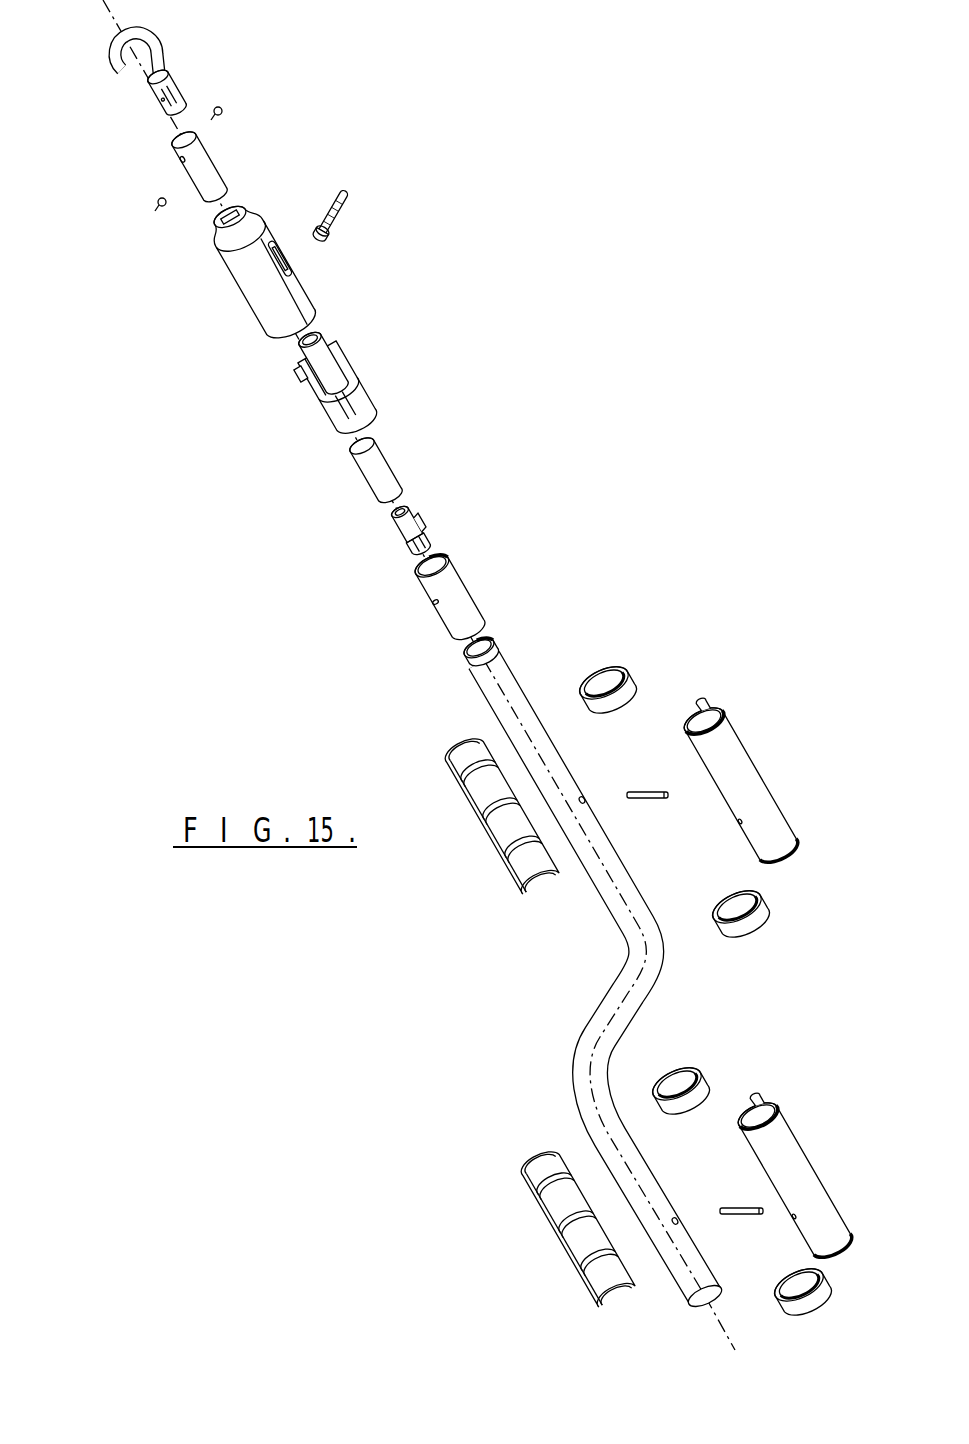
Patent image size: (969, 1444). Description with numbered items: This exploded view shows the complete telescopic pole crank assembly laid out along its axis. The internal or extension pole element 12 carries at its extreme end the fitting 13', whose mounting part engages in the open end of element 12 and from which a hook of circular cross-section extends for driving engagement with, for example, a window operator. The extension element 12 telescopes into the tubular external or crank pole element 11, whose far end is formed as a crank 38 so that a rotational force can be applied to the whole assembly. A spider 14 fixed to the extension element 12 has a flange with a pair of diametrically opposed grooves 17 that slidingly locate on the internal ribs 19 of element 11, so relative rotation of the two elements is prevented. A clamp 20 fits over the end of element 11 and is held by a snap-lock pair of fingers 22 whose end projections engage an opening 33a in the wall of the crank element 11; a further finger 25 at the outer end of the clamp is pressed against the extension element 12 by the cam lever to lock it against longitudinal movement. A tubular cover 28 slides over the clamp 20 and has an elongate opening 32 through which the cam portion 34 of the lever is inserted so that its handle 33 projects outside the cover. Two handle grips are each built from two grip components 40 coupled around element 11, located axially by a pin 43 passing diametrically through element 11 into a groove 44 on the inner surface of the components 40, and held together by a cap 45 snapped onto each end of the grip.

The fitting 13' is at (192, 73).
The internal/extension pole element 12 is at (200, 155).
The handle 33 is at (351, 198).
The cam portion 34 is at (330, 234).
The cover 28 is at (227, 262).
The elongate opening 32 is at (277, 266).
The clamp 20 is at (297, 363).
The fingers 22 is at (330, 425).
The finger 25 is at (342, 372).
The spider 14 is at (418, 518).
The grooves 17 is at (399, 545).
The internal ribs 19 is at (454, 560).
The hole 33a is at (434, 602).
The external/crank pole element 11 is at (502, 660).
The crank 38 is at (611, 990).
The grip components 40 is at (741, 758).
The groove 44 is at (470, 815).
The cap 45 is at (628, 668).
The pin 43 is at (648, 797).